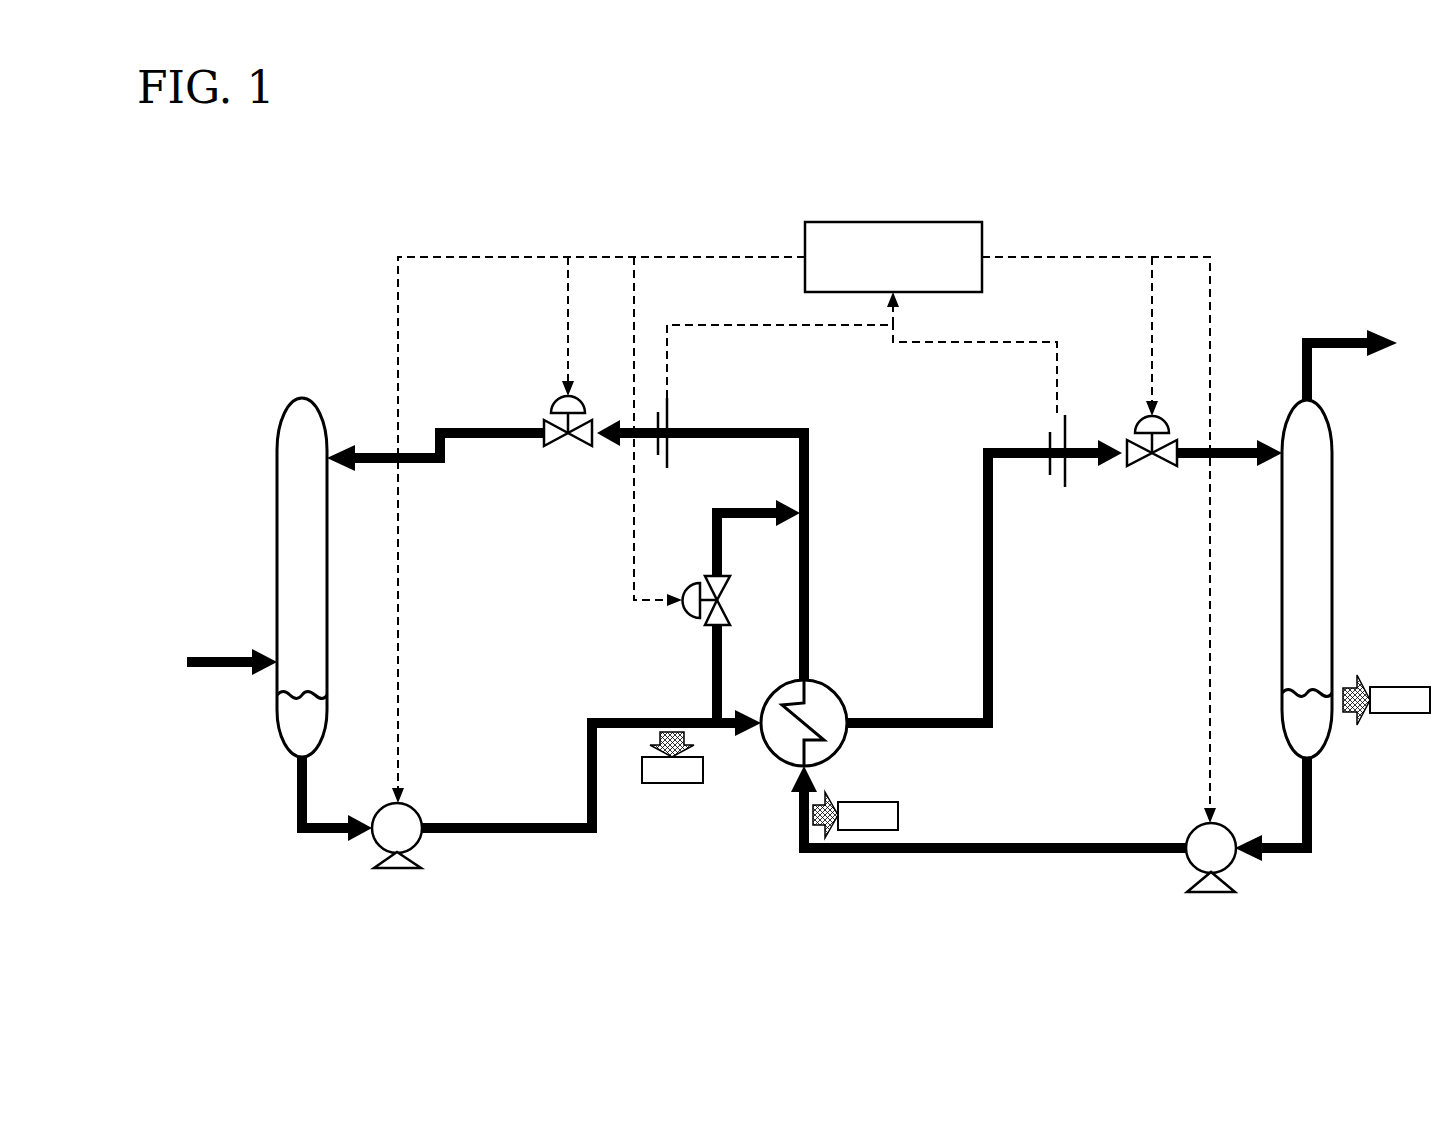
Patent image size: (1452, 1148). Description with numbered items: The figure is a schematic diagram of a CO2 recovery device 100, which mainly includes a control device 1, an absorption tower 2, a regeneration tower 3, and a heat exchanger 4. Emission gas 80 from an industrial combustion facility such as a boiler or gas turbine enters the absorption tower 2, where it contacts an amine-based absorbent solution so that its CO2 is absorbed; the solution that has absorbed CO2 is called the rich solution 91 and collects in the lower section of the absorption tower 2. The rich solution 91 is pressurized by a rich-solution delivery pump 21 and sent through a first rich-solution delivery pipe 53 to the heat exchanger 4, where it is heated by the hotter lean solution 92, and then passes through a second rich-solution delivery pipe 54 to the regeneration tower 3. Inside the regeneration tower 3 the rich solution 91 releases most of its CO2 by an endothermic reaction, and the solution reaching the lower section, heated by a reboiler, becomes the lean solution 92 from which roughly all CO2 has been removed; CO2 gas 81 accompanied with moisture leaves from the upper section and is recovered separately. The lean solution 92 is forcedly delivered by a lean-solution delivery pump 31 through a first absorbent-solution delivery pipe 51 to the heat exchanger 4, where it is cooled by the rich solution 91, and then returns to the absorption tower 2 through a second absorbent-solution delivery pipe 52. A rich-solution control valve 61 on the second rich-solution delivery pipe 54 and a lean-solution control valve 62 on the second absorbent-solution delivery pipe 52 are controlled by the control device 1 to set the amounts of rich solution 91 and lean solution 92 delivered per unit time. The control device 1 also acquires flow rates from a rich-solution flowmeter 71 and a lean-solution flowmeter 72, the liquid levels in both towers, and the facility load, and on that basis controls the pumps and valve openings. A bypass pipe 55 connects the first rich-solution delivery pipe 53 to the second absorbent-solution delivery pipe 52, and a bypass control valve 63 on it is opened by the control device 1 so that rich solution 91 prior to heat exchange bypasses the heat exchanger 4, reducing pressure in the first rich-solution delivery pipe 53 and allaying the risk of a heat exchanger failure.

The CO2 recovery device 100 is at (806, 518).
The control device 1 is at (893, 239).
The absorption tower 2 is at (302, 539).
The regeneration tower 3 is at (1335, 579).
The heat exchanger 4 is at (810, 688).
The rich-solution delivery pump 21 is at (418, 807).
The lean-solution delivery pump 31 is at (1241, 874).
The first absorbent-solution delivery pipe 51 is at (988, 851).
The second absorbent-solution delivery pipe 52 is at (700, 521).
The first rich-solution delivery pipe 53 is at (591, 809).
The second rich-solution delivery pipe 54 is at (984, 581).
The bypass pipe 55 is at (701, 611).
The rich-solution control valve 61 is at (1163, 406).
The lean-solution control valve 62 is at (568, 453).
The bypass control valve 63 is at (739, 600).
The rich-solution flowmeter 71 is at (1095, 475).
The lean-solution flowmeter 72 is at (678, 464).
The emission gas 80 is at (232, 627).
The CO2 gas 81 is at (1369, 363).
The rich solution 91 is at (254, 718).
The lean solution 92 is at (1351, 726).